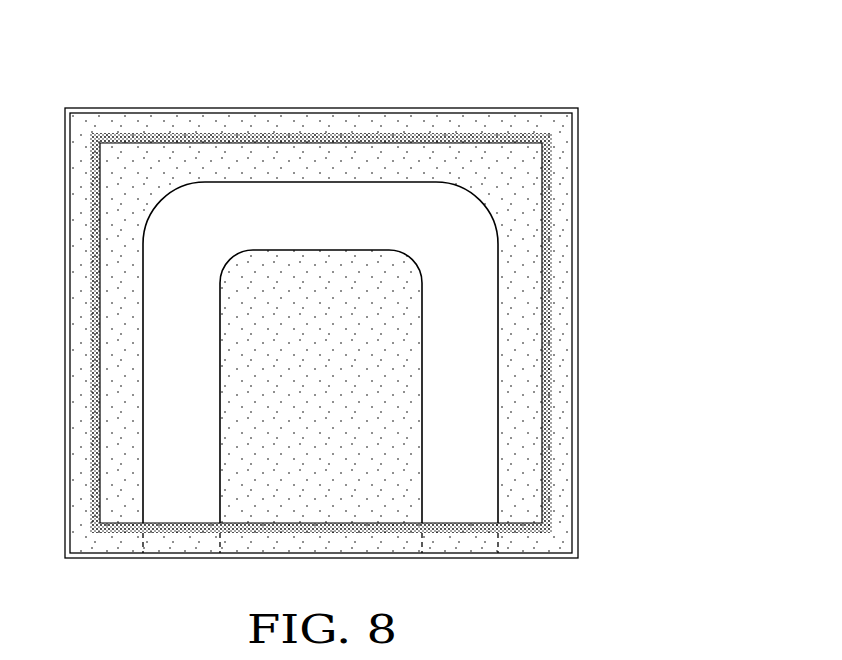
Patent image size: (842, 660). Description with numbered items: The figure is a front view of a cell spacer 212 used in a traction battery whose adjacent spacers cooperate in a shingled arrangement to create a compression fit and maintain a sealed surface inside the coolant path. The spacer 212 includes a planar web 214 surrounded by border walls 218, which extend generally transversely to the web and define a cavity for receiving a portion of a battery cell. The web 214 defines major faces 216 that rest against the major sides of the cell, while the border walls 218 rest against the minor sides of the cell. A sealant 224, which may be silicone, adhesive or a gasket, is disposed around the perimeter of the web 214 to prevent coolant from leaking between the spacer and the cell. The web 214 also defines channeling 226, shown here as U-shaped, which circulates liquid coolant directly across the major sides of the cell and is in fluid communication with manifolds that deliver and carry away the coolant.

The spacer 212 is at (565, 75).
The planar web 214 is at (522, 452).
The major faces 216 is at (154, 183).
The border walls 218 is at (572, 208).
The sealant 224 is at (547, 333).
The channeling 226 is at (412, 183).